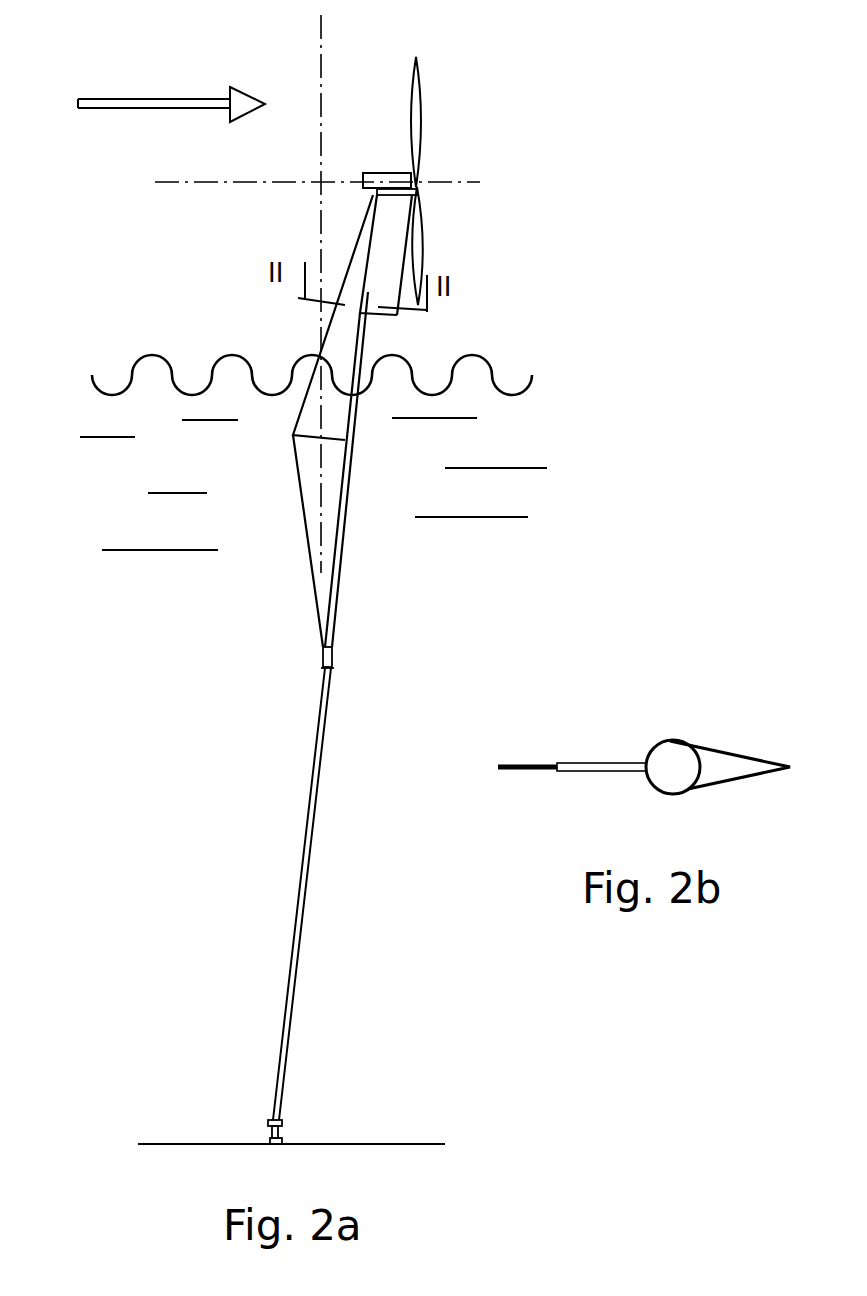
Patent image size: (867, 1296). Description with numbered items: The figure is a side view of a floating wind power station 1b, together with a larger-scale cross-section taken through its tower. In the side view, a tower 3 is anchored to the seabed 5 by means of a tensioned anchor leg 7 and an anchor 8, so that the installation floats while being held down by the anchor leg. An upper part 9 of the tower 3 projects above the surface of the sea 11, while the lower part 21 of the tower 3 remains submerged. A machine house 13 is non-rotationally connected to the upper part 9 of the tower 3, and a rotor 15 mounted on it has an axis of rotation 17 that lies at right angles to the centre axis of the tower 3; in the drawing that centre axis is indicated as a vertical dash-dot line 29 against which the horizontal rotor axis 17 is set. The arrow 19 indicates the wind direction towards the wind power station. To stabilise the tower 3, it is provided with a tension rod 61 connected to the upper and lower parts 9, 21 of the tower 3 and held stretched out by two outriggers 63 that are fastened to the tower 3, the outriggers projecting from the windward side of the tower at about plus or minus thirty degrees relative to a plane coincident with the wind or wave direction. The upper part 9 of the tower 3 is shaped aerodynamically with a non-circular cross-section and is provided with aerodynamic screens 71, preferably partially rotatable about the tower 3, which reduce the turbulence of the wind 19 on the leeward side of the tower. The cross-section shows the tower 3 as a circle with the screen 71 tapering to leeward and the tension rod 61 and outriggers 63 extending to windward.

In FIG. 2A, the floating wind power station 1b is at (607, 88).
In FIG. 2A, the tower 3 is at (373, 332).
In FIG. 2B, the tower 3 is at (680, 778).
In FIG. 2A, the seabed 5 is at (370, 1143).
In FIG. 2A, the tensioned anchor leg 7 is at (293, 923).
In FIG. 2A, the anchor 8 is at (268, 1122).
In FIG. 2A, the upper part of the tower 9 is at (420, 190).
In FIG. 2A, the surface of the sea 11 is at (132, 360).
In FIG. 2A, the machine house 13 is at (373, 173).
In FIG. 2A, the rotor 15 is at (420, 77).
In FIG. 2A, the axis of rotation 17 is at (462, 182).
In FIG. 2A, the wind direction arrow 19 is at (110, 108).
In FIG. 2A, the lower part of the tower 21 is at (345, 582).
In FIG. 2A, the vertical axis 29 is at (321, 45).
In FIG. 2A, the tension rod 61 is at (297, 416).
In FIG. 2B, the tension rod 61 is at (558, 775).
In FIG. 2A, the outriggers 63 is at (310, 450).
In FIG. 2B, the outriggers 63 is at (588, 775).
In FIG. 2A, the aerodynamic screens 71 is at (403, 267).
In FIG. 2B, the aerodynamic screens 71 is at (755, 778).